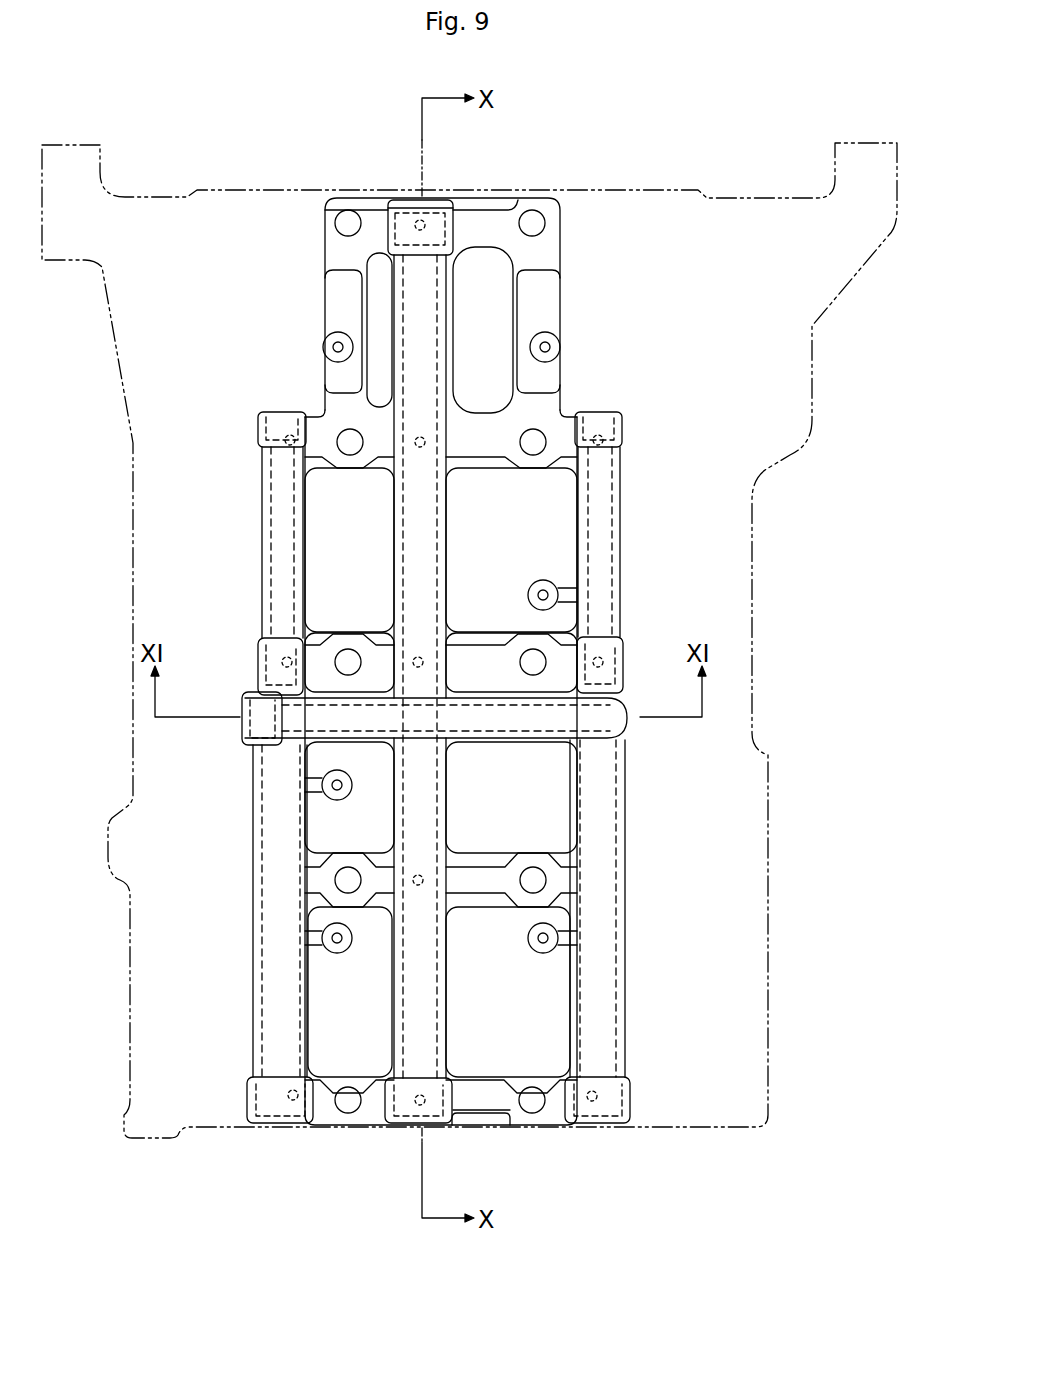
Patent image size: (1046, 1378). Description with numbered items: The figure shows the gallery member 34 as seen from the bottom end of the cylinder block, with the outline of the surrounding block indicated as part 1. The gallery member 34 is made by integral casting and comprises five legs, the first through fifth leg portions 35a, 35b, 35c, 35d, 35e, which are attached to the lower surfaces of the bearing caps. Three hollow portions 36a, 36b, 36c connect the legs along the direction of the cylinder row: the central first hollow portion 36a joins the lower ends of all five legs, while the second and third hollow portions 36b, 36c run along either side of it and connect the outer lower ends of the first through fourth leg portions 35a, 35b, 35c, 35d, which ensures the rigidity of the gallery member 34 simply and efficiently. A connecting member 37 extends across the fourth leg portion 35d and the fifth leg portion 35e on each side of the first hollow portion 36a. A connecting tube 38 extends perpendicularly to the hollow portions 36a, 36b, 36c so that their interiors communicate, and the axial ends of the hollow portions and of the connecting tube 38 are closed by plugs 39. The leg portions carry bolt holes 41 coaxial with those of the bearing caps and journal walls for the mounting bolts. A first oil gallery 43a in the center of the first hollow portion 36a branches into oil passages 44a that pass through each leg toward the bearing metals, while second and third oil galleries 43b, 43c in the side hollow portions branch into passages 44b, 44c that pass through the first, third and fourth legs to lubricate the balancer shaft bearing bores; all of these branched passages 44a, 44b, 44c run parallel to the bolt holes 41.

The engine body / housing 1 is at (702, 191).
The gallery member 34 is at (575, 398).
The first leg portion 35a is at (472, 1088).
The second leg portion 35b is at (482, 918).
The third leg portion 35c is at (470, 652).
The fourth leg portion 35d is at (478, 414).
The fifth leg portion 35e is at (484, 208).
The first hollow portion 36a is at (392, 985).
The second hollow portion 36b is at (253, 985).
The third hollow portion 36c is at (625, 985).
The connecting member 37 is at (326, 330).
The connecting tube 38 is at (488, 742).
The plug 39 is at (393, 205).
The bolt hole 41 is at (340, 224).
The first oil gallery 43a is at (432, 985).
The second oil gallery 43b is at (256, 920).
The third oil gallery 43c is at (610, 940).
The branched oil passage 44a is at (422, 220).
The branched oil passage 44b is at (288, 444).
The branched oil passage 44c is at (600, 444).